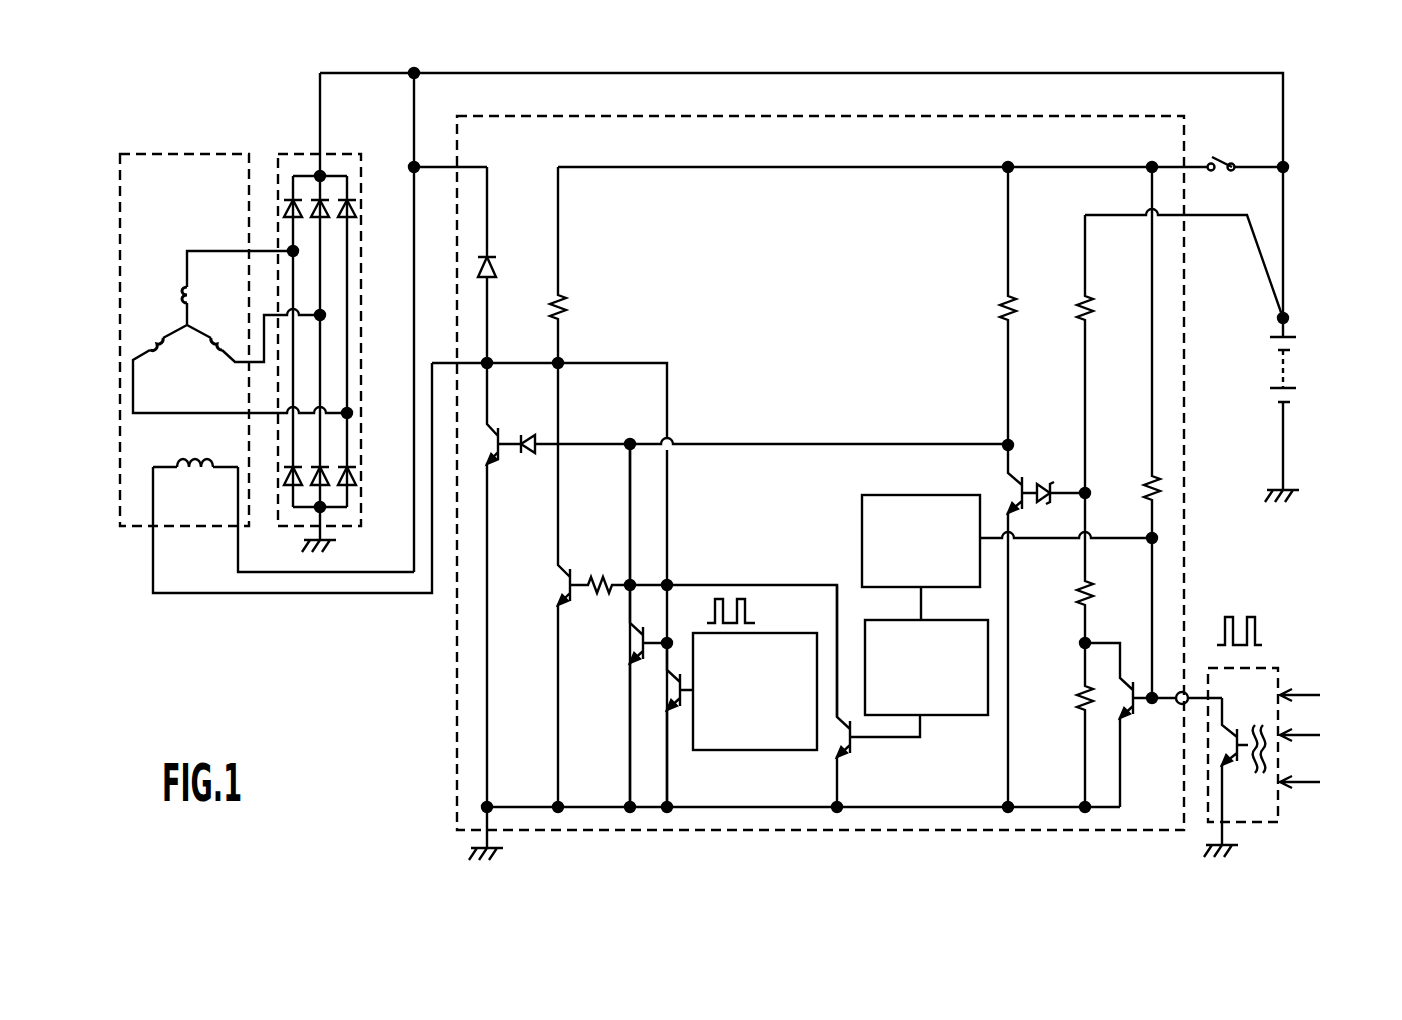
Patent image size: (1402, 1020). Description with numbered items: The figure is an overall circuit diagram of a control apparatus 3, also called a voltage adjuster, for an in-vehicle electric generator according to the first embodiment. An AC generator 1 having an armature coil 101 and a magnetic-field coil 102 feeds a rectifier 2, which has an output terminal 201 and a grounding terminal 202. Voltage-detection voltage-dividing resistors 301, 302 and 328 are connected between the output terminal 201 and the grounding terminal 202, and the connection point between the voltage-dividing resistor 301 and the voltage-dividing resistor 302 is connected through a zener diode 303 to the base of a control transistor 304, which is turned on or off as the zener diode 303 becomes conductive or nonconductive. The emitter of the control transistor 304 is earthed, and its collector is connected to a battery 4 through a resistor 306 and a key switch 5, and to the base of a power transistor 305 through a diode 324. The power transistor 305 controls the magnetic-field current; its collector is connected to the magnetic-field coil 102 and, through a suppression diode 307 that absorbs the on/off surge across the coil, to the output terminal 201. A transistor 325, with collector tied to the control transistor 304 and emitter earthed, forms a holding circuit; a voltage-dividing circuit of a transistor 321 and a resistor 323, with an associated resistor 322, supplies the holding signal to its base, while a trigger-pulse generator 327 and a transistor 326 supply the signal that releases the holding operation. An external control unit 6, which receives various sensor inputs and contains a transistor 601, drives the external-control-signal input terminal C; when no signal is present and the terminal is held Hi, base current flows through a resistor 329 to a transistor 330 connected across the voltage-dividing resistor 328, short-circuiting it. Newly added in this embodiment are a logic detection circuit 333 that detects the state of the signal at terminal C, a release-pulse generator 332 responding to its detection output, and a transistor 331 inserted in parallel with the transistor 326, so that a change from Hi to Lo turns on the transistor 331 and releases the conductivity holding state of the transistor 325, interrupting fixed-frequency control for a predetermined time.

The AC generator 1 is at (276, 319).
The armature coil 101 is at (173, 307).
The magnetic-field coil 102 is at (195, 485).
The rectifier 2 is at (328, 357).
The output terminal 201 is at (320, 176).
The grounding terminal 202 is at (323, 517).
The control apparatus 3 is at (723, 830).
The voltage-dividing resistor 301 is at (1073, 315).
The voltage-dividing resistor 302 is at (1098, 600).
The zener diode 303 is at (1042, 470).
The control transistor 304 is at (1005, 482).
The power transistor 305 is at (500, 468).
The resistor 306 is at (1000, 313).
The suppression diode 307 is at (500, 262).
The transistor 321 is at (553, 582).
The resistor 322 is at (590, 570).
The resistor 323 is at (577, 305).
The diode 324 is at (530, 428).
The transistor 325 is at (622, 650).
The transistor 326 is at (680, 710).
The trigger-pulse generator 327 is at (790, 755).
The voltage-dividing resistor 328 is at (1065, 700).
The resistor 329 is at (1140, 490).
The transistor 330 is at (1140, 718).
The transistor 331 is at (858, 745).
The release-pulse generator 332 is at (952, 720).
The logic detection circuit 333 is at (860, 535).
The battery 4 is at (1297, 360).
The key switch 5 is at (1215, 150).
The external control unit 6 is at (1302, 745).
The transistor 601 is at (1238, 770).